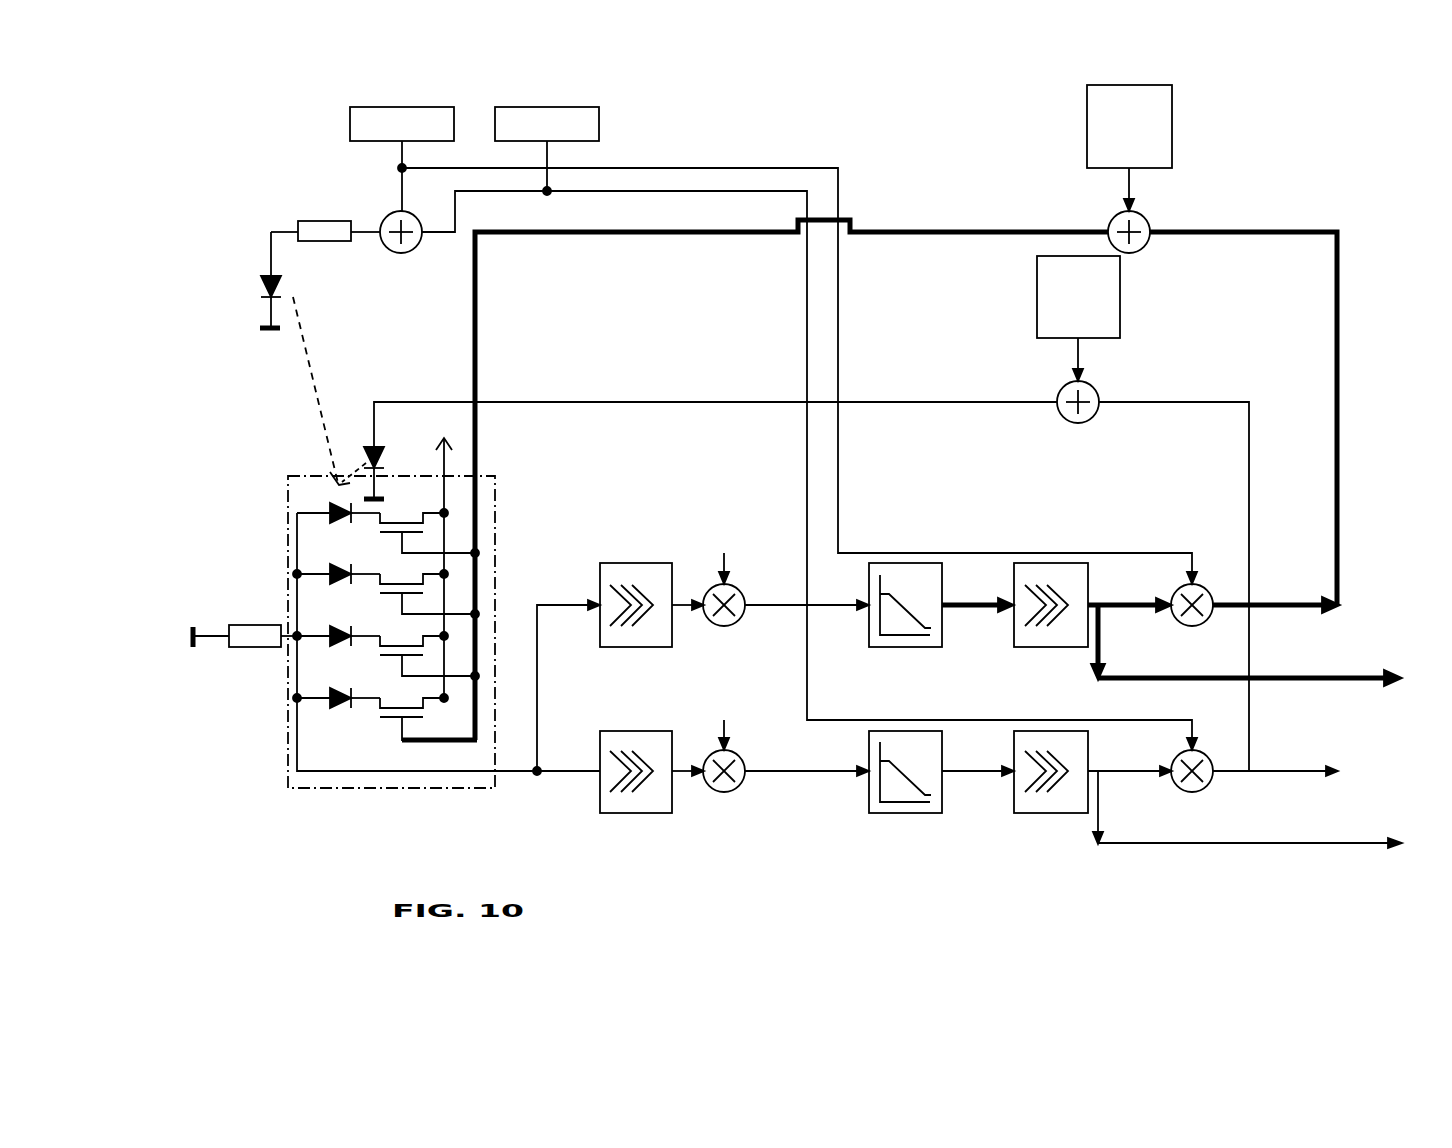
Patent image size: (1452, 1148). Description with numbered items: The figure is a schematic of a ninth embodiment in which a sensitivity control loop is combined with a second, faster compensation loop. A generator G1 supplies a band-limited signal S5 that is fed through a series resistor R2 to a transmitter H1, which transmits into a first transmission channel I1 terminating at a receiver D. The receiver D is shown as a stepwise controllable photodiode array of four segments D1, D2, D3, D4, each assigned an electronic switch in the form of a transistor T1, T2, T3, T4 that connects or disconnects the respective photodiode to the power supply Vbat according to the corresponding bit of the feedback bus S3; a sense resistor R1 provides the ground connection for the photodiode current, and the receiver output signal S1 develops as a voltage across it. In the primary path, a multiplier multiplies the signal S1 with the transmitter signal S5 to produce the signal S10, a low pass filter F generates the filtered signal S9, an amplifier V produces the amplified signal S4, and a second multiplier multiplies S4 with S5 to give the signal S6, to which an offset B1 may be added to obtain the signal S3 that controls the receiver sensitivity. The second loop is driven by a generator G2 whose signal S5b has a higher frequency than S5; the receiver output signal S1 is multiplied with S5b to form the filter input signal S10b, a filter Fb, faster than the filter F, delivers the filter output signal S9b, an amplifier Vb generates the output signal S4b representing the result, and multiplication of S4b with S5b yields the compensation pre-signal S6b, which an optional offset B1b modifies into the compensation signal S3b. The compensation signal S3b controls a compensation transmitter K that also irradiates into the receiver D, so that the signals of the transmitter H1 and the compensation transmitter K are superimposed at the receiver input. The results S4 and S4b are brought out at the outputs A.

The generator G1 is at (402, 159).
The generator G2 is at (547, 151).
The offset B1 is at (1129, 148).
The offset B1b is at (1078, 318).
The sense resistor R1 is at (245, 624).
The series resistor R2 is at (325, 217).
The transmitter H1 is at (246, 280).
The first transmission channel I1 is at (329, 391).
The compensation transmitter K is at (381, 473).
The receiver D is at (391, 642).
The photodiode D1 is at (338, 506).
The photodiode D2 is at (336, 567).
The photodiode D3 is at (336, 629).
The photodiode D4 is at (336, 691).
The transistor T1 is at (429, 523).
The transistor T2 is at (421, 582).
The transistor T3 is at (421, 644).
The transistor T4 is at (420, 706).
The power supply Vbat is at (414, 555).
The filter F is at (905, 619).
The filter Fb is at (905, 783).
The amplifier V is at (1051, 619).
The amplifier Vb is at (1051, 783).
The receiver output signal S1 is at (448, 655).
The signal S3 is at (791, 464).
The compensation signal S3b is at (715, 412).
The amplified signal S4 is at (1130, 639).
The output signal S4b is at (1130, 805).
The signal S5 is at (799, 364).
The signal S5b is at (809, 470).
The signal S6 is at (1245, 412).
The compensation pre-signal S6b is at (1218, 592).
The filtered signal S9 is at (978, 616).
The filter output signal S9b is at (978, 781).
The signal S10 is at (807, 615).
The filter input signal S10b is at (807, 781).
The output A is at (1250, 780).